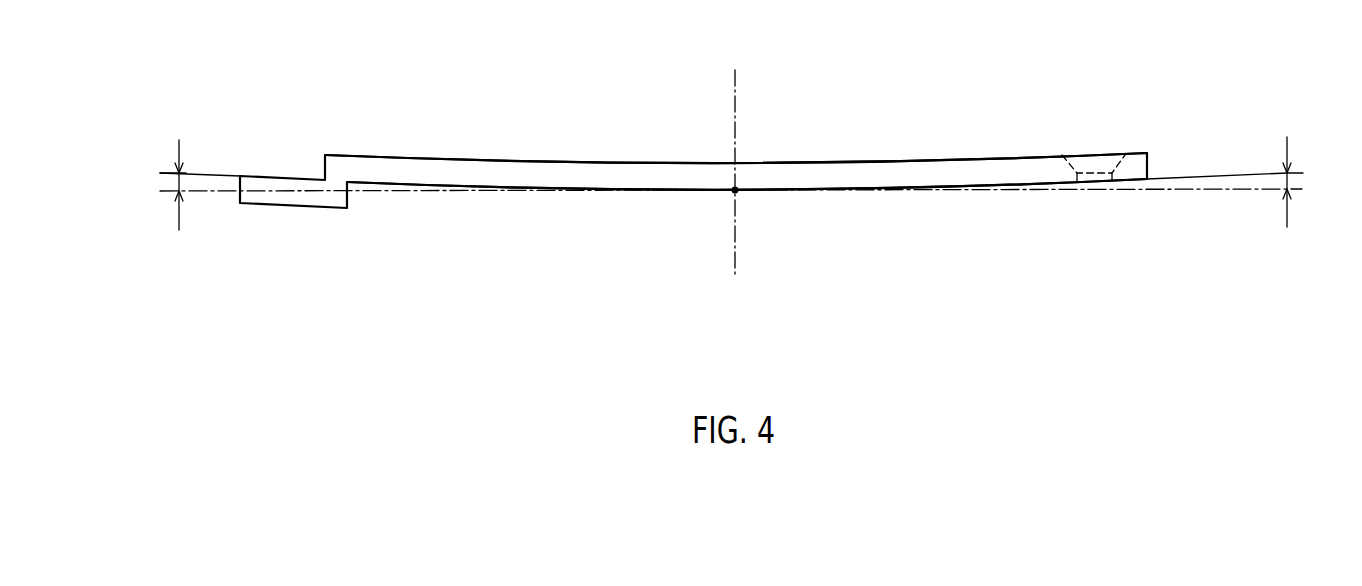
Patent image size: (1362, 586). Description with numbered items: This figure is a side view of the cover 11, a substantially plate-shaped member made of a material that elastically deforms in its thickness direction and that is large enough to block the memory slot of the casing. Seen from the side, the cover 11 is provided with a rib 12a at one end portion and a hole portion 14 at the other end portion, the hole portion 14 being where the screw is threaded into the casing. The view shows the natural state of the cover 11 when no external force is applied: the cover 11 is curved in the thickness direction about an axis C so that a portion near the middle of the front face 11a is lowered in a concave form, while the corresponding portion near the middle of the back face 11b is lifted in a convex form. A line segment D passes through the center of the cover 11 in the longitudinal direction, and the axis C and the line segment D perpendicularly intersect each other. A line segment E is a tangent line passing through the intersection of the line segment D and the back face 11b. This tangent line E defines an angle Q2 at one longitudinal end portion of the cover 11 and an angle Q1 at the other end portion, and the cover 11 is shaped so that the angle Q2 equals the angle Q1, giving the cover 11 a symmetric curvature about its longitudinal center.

The cover 11 is at (812, 95).
The front face 11a is at (588, 160).
The back face 11b is at (695, 193).
The rib 12a is at (283, 179).
The hole portion 14 is at (1089, 160).
The axis C is at (738, 192).
The line segment D is at (735, 124).
The line segment E is at (215, 195).
The angle Q1 is at (1290, 181).
The angle Q2 is at (179, 180).